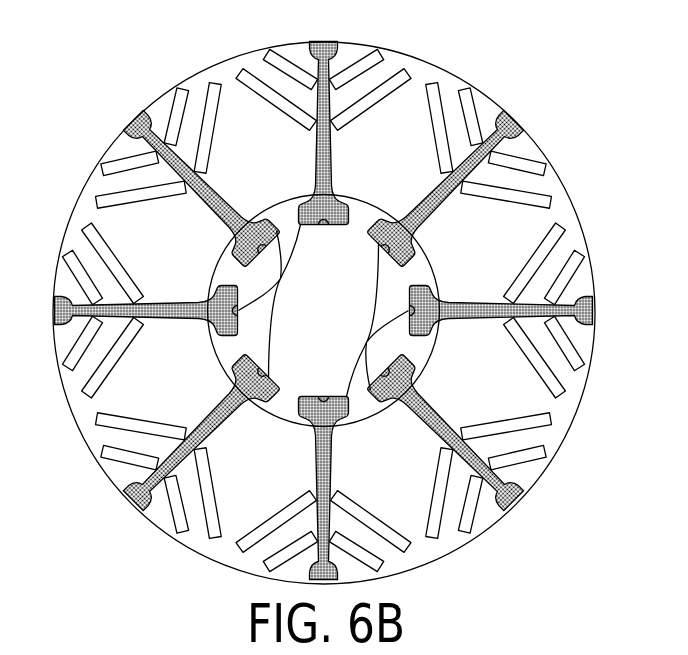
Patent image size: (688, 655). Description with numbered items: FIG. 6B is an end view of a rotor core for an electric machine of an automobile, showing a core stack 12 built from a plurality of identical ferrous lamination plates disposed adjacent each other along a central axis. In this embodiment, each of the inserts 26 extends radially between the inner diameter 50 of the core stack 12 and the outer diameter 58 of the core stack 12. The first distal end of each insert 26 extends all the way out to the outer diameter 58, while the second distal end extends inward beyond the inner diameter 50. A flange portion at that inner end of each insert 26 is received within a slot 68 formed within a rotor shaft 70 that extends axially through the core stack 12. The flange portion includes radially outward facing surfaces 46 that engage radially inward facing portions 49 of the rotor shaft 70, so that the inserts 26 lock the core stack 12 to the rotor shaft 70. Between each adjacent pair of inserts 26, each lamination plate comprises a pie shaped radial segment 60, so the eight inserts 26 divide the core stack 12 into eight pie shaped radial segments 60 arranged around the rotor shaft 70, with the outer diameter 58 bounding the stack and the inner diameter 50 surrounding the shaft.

The core stack 12 is at (115, 110).
The insert 26 is at (312, 45).
The radially outward facing surfaces 46 is at (270, 209).
The radially inward facing portions 49 is at (318, 197).
The inner diameter 50 is at (282, 405).
The outer diameter 58 is at (451, 71).
The pie shaped radial segments 60 is at (405, 486).
The slot 68 is at (280, 278).
The rotor shaft 70 is at (337, 322).